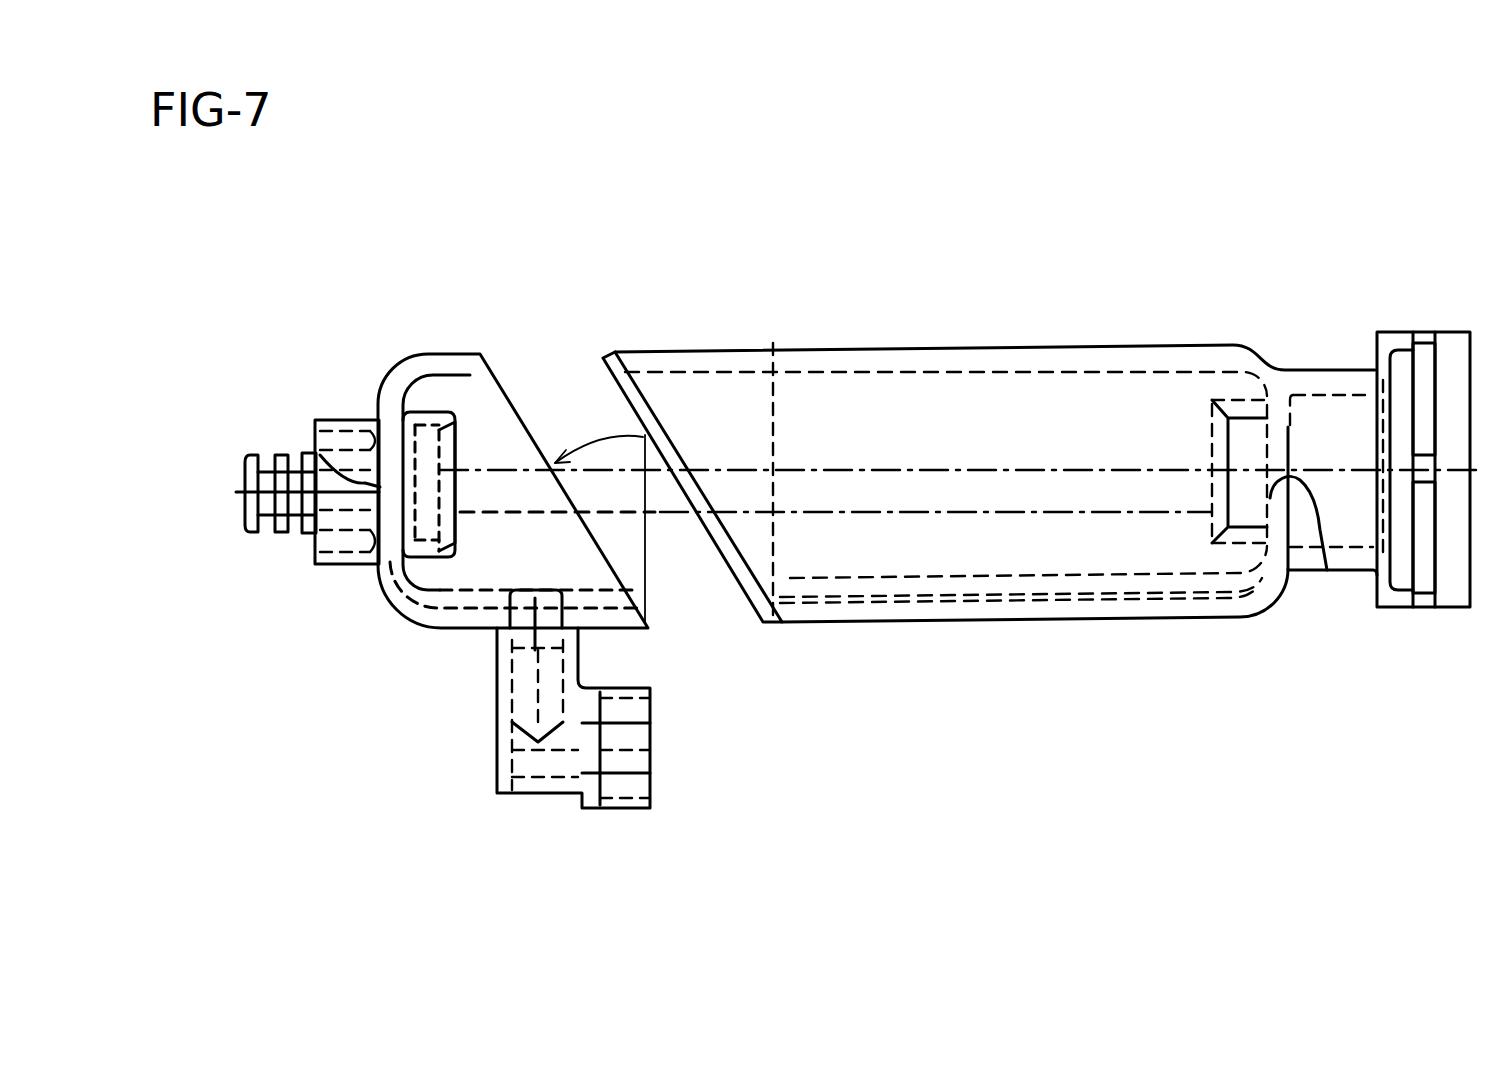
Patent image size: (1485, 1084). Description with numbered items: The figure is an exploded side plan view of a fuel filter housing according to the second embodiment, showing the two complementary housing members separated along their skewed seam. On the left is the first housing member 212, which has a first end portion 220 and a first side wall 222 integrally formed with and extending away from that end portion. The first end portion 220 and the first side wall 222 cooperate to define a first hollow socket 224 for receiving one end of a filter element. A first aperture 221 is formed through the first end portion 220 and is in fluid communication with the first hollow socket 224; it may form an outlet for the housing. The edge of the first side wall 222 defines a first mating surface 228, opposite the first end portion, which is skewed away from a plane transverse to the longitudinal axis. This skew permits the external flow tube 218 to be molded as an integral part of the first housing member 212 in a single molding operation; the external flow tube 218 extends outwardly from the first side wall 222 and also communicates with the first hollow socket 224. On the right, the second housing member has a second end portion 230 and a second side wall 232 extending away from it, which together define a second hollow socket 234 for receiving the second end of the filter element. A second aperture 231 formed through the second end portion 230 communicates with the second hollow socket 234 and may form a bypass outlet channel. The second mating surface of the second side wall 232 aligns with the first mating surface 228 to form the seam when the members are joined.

The first housing member 212 is at (423, 638).
The external flow tube 218 is at (532, 797).
The first end portion 220 is at (383, 578).
The first aperture 221 is at (308, 440).
The first side wall 222 is at (457, 353).
The first hollow socket 224 is at (515, 448).
The first mating surface 228 is at (483, 448).
The second end portion 230 is at (1293, 422).
The second aperture 231 is at (1327, 577).
The second side wall 232 is at (1060, 342).
The second hollow socket 234 is at (803, 538).